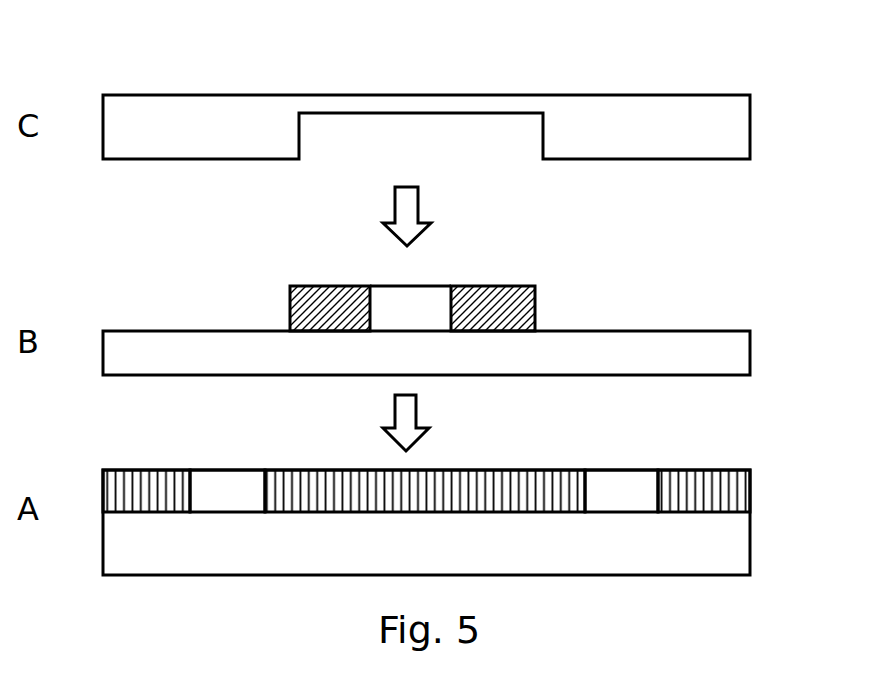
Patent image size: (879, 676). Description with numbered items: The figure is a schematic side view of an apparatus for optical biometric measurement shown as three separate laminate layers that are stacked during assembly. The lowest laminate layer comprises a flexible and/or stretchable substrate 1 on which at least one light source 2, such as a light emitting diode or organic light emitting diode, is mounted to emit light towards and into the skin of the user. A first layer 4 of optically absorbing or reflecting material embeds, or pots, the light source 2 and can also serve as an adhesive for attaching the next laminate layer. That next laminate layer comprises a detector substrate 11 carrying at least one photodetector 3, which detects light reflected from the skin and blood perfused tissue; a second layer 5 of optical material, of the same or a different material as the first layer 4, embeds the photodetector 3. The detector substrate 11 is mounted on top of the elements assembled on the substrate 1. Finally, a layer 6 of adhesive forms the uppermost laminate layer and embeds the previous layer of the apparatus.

The layer of adhesive 6 is at (268, 109).
The second layer of optical material 5 is at (318, 291).
The photodetector 3 is at (428, 295).
The detector substrate 11 is at (735, 353).
The first layer of optical material 4 is at (737, 490).
The substrate 1 is at (147, 560).
The light source 2 is at (613, 502).